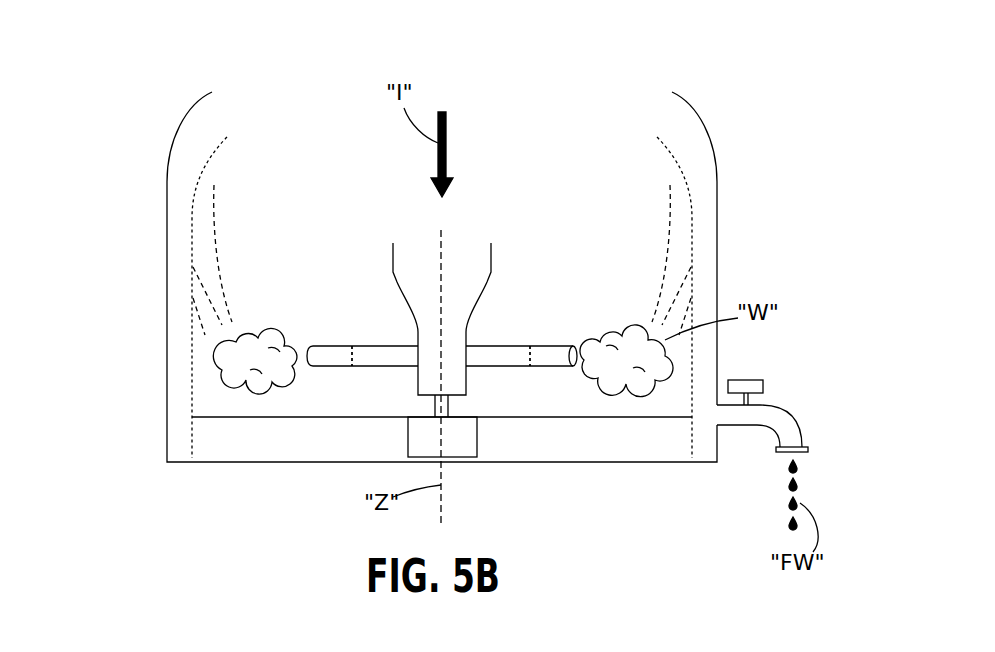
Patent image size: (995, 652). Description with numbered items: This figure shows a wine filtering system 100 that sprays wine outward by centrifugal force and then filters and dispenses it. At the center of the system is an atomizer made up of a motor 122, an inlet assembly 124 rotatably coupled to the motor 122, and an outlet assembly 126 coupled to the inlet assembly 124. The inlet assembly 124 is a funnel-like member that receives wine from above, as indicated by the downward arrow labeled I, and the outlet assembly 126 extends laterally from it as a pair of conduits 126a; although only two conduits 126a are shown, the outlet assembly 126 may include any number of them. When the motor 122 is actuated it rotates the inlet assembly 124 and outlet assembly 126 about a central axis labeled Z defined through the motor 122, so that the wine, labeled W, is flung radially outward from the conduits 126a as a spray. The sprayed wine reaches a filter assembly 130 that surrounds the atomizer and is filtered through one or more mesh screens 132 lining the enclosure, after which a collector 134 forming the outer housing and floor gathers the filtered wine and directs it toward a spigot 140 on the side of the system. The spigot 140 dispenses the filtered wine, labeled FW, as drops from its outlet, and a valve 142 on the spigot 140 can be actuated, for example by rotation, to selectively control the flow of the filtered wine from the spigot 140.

The wine filtering system 100 is at (745, 142).
The motor 122 is at (466, 445).
The inlet assembly 124 is at (490, 256).
The outlet assembly 126 is at (338, 360).
The conduit 126a is at (363, 345).
The filter assembly 130 is at (188, 252).
The mesh screen 132 is at (185, 360).
The collector 134 is at (167, 333).
The spigot 140 is at (786, 420).
The valve 142 is at (755, 386).